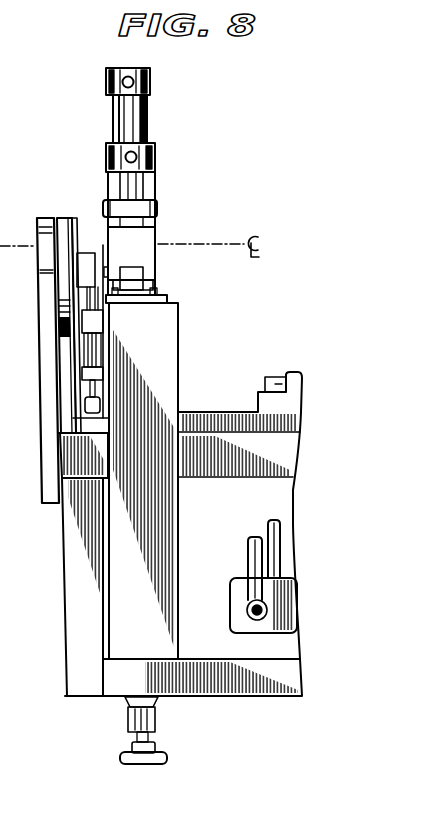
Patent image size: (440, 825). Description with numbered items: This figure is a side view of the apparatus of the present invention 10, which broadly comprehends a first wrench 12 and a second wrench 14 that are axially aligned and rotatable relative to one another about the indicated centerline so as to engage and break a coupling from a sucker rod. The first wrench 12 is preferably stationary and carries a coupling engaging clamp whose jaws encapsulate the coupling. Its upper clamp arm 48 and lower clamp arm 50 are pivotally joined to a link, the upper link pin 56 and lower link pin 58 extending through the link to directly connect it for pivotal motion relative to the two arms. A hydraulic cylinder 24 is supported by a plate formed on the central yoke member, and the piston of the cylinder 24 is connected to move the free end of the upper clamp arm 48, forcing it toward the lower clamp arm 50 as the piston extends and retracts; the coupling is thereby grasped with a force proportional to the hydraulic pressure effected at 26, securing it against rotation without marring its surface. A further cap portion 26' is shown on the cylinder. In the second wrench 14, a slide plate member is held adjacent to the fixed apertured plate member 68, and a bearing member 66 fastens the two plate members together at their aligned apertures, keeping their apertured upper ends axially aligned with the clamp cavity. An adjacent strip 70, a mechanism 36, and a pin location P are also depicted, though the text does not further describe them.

The present invention 10 is at (242, 133).
The first wrench 12 is at (180, 187).
The second wrench 14 is at (30, 288).
The hydraulic cylinder 24 is at (148, 120).
The hydraulic pressure connection 26 is at (148, 73).
The lower cylinder cap 26' is at (153, 154).
The adjustment mechanism 36 is at (104, 350).
The upper clamp arm 48 is at (158, 232).
The lower clamp arm 50 is at (158, 254).
The upper link pin 56 is at (158, 210).
The lower link pin 58 is at (158, 275).
The bearing member 66 is at (43, 217).
The fixed apertured plate member 68 is at (60, 217).
The guide strip 70 is at (73, 217).
The pin P is at (232, 604).